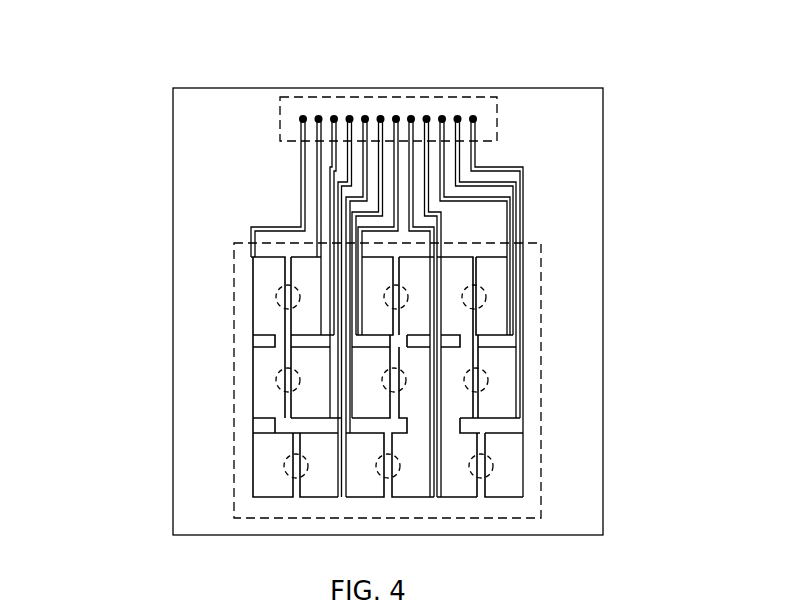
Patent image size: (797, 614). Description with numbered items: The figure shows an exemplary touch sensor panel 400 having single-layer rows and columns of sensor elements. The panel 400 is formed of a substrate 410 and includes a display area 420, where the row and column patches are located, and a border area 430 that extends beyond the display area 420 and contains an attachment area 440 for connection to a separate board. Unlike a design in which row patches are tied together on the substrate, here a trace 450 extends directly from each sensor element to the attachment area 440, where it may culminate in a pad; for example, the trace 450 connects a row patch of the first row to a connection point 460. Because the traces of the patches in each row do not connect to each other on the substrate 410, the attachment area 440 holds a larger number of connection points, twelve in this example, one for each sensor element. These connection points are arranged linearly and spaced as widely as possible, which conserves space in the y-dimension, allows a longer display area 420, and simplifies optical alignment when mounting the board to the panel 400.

The panel 400 is at (391, 272).
The substrate 410 is at (603, 133).
The display area 420 is at (300, 387).
The border area 430 is at (276, 268).
The attachment area 440 is at (280, 130).
The trace 450 is at (318, 204).
The connection point 460 is at (317, 117).